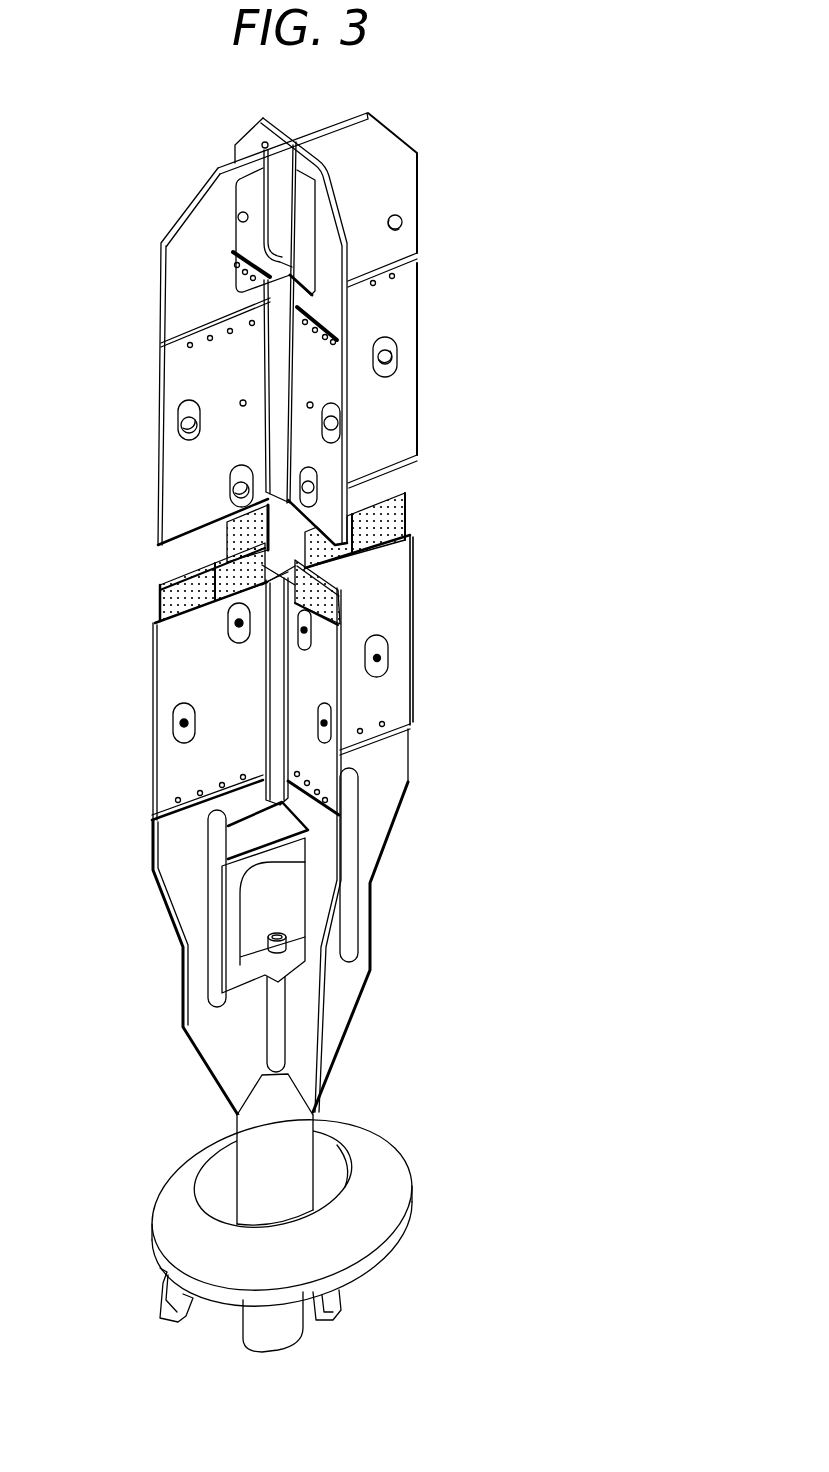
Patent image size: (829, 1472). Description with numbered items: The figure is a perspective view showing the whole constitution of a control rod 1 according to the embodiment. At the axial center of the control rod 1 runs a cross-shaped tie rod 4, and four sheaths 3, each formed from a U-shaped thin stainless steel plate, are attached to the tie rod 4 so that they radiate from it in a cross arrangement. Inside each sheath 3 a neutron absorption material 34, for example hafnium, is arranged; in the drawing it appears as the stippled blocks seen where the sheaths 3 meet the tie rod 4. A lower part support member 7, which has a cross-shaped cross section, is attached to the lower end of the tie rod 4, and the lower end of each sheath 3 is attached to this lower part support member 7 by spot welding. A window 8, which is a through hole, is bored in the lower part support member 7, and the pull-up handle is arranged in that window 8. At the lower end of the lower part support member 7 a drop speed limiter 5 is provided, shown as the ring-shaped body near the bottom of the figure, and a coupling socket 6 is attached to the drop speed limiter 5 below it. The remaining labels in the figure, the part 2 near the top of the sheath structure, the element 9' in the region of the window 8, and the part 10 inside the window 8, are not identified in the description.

The control rod 1 is at (110, 400).
The upper plate 2 is at (402, 195).
The sheath 3 is at (418, 387).
The neutron absorption material 34 is at (407, 525).
The tie rod 4 is at (270, 722).
The drop speed limiter 5 is at (387, 1173).
The coupling socket 6 is at (285, 1344).
The lower part support member 7 is at (377, 832).
The window 8 is at (240, 842).
The mounting plate 9' is at (243, 887).
The nut 10 is at (277, 930).